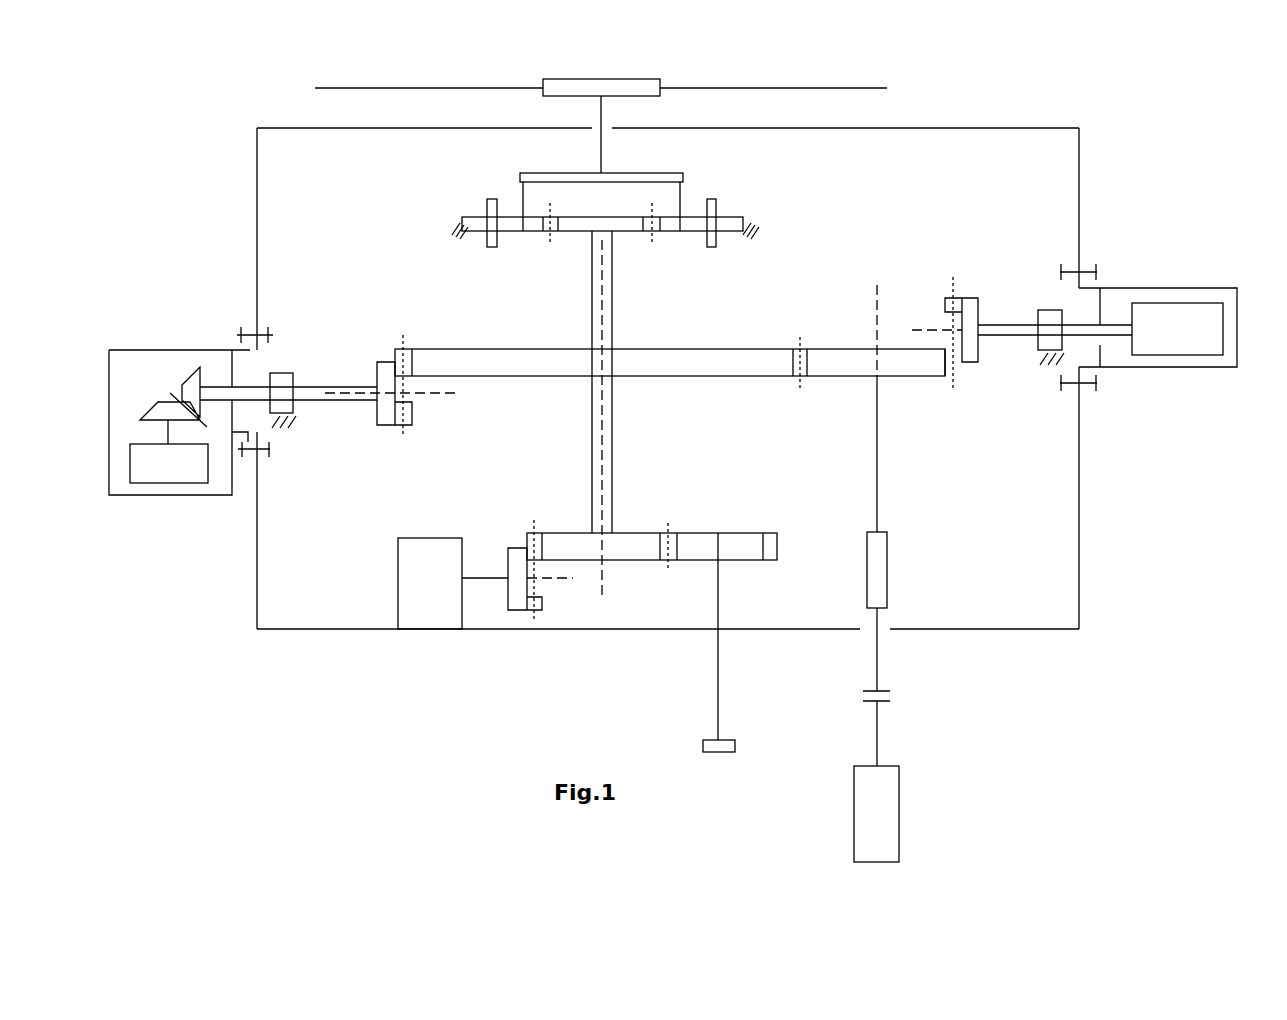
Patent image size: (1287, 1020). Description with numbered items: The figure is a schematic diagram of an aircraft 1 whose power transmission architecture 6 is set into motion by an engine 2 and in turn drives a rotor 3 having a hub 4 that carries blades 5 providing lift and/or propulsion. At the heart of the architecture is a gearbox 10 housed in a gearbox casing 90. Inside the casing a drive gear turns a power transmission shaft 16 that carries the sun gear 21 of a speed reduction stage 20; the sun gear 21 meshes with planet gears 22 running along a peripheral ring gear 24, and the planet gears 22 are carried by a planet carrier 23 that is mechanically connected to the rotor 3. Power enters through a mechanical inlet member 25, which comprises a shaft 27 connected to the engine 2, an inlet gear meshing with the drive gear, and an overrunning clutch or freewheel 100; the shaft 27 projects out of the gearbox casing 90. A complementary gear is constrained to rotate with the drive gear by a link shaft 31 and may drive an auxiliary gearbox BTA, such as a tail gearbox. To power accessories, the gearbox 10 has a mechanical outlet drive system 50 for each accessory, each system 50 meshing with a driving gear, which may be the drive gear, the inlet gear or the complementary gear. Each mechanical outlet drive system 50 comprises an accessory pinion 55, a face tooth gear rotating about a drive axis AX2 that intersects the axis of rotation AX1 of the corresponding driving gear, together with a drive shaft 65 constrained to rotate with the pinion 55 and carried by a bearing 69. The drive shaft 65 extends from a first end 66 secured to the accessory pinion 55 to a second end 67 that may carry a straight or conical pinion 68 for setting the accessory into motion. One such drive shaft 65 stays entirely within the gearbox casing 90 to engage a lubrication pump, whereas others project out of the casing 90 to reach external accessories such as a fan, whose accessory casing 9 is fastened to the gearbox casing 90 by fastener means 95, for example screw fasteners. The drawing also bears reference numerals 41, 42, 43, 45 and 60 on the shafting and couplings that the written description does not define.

The aircraft 1 is at (1150, 121).
The engine 2 is at (899, 843).
The rotor 3 is at (645, 86).
The hub 4 is at (657, 80).
The blades 5 is at (772, 90).
The power transmission architecture 6 is at (270, 652).
The accessory casing 9 is at (190, 350).
The gearbox 10 is at (1107, 637).
The power transmission shaft 16 is at (592, 310).
The speed reduction stage 20 is at (645, 214).
The sun gear 21 is at (632, 232).
The planet gear 22 is at (688, 217).
The planet carrier 23 is at (538, 173).
The peripheral ring gear 24 is at (470, 213).
The mechanical inlet member 25 is at (912, 571).
The shaft 27 is at (877, 660).
The link shaft 31 is at (592, 480).
The transmission shaft 41 is at (670, 443).
The shaft end 42 is at (505, 376).
The shaft section 43 is at (650, 533).
The gear toothing 45 is at (405, 349).
The mechanical outlet drive system 50 is at (306, 445).
The accessory pinion 55 is at (388, 345).
The coupling member 60 is at (405, 430).
The drive shaft 65 is at (320, 387).
The first end 66 is at (378, 410).
The second end 67 is at (218, 380).
The pinion 68 is at (197, 372).
The bearing 69 is at (283, 373).
The gearbox casing 90 is at (1083, 577).
The fastener means 95 is at (250, 472).
The freewheel 100 is at (866, 545).
The axis of rotation AX1 is at (620, 332).
The drive axis AX2 is at (920, 330).
The auxiliary gearbox BTA is at (730, 742).